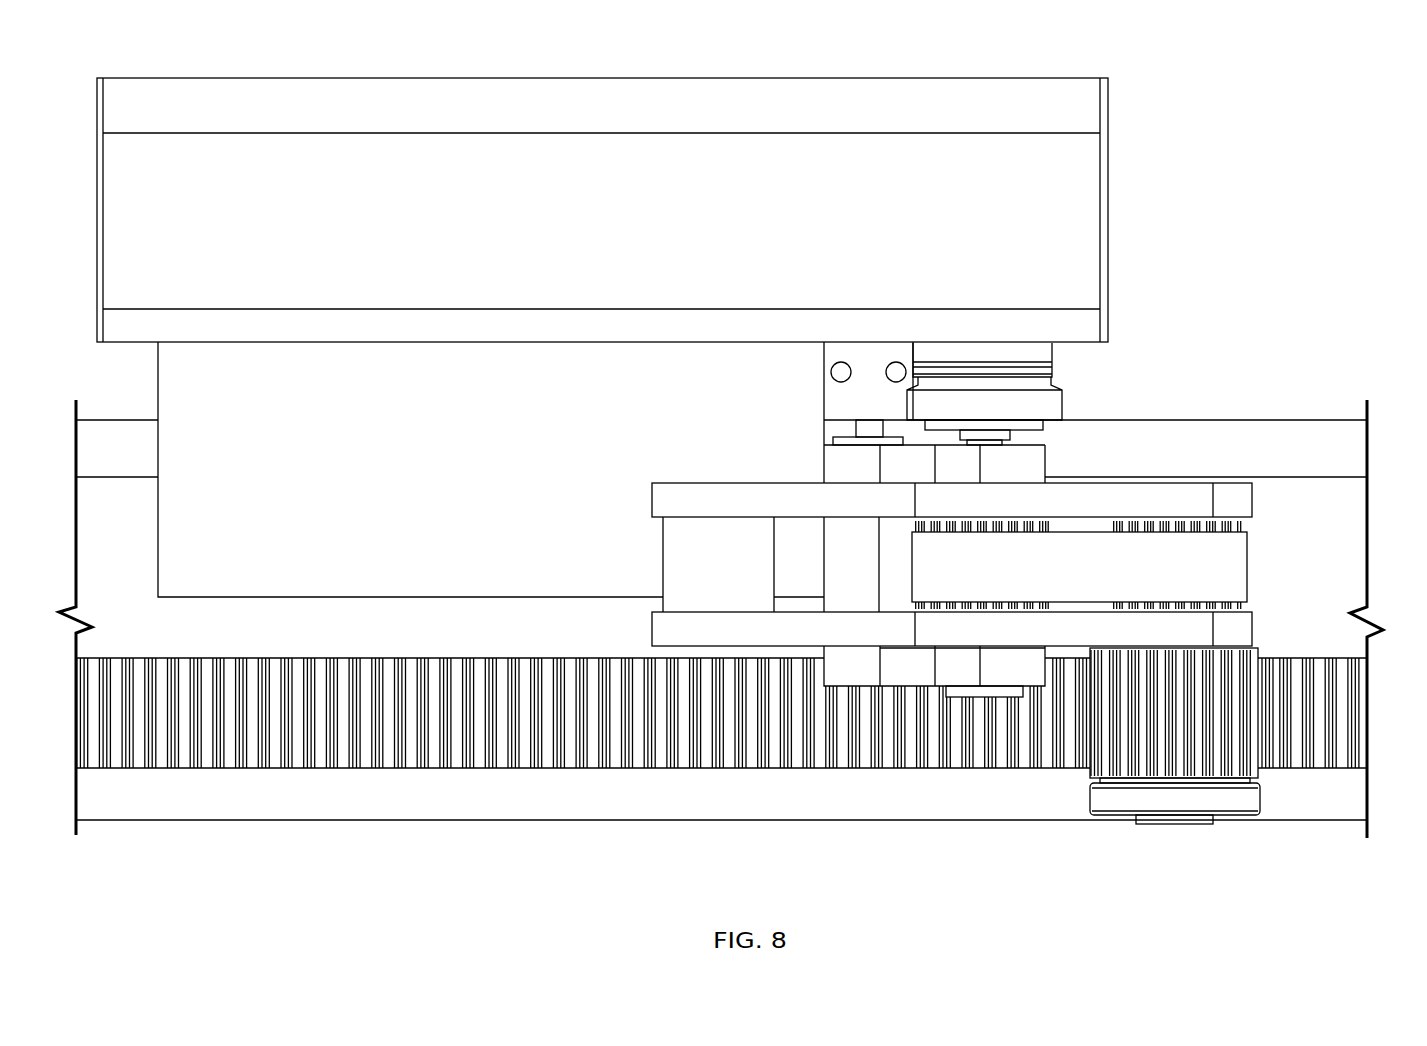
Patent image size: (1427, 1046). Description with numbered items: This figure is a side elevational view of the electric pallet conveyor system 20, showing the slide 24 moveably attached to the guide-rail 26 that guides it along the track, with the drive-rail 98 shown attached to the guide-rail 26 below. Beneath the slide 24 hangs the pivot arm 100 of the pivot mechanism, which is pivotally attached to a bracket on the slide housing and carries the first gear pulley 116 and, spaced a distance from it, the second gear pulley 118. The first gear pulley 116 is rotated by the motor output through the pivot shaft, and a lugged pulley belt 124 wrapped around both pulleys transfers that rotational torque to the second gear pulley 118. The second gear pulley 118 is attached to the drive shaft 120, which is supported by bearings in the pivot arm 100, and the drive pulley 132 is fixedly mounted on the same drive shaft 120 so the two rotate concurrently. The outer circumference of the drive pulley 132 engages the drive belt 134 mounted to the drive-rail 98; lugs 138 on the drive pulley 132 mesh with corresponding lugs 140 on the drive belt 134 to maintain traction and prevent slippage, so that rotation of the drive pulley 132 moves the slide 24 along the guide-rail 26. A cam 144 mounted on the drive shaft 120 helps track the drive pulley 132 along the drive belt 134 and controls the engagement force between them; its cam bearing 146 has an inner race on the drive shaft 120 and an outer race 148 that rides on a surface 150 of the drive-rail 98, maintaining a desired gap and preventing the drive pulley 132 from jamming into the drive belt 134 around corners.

The electric pallet conveyor system 20 is at (1198, 177).
The slide 24 is at (1108, 99).
The guide-rail 26 is at (1210, 420).
The drive-rail 98 is at (677, 820).
The pivot arm 100 is at (707, 483).
The first gear pulley 116 is at (1043, 523).
The second gear pulley 118 is at (1238, 522).
The drive shaft 120 is at (1170, 824).
The pulley belt 124 is at (1247, 570).
The drive pulley 132 is at (1257, 650).
The drive belt 134 is at (925, 770).
The lugs 138 is at (1142, 747).
The lugs 140 is at (1305, 768).
The cam 144 is at (1260, 802).
The cam bearing 146 is at (1113, 815).
The outer race 148 is at (1090, 800).
The surface 150 is at (548, 792).